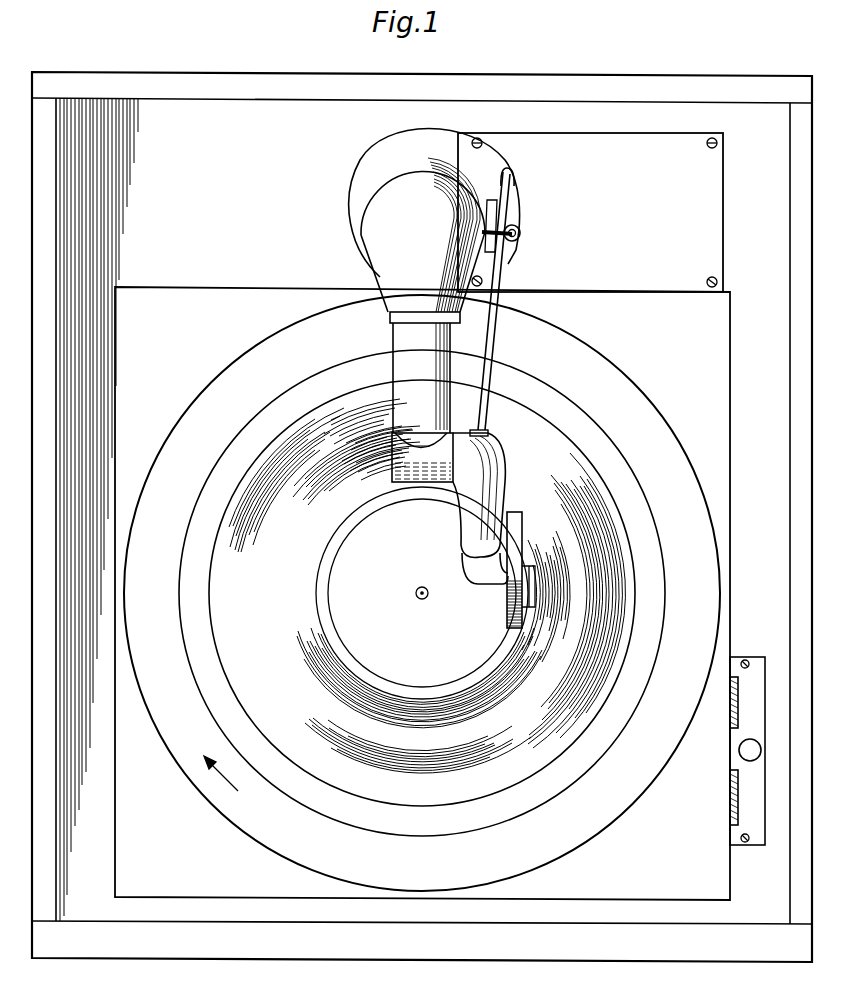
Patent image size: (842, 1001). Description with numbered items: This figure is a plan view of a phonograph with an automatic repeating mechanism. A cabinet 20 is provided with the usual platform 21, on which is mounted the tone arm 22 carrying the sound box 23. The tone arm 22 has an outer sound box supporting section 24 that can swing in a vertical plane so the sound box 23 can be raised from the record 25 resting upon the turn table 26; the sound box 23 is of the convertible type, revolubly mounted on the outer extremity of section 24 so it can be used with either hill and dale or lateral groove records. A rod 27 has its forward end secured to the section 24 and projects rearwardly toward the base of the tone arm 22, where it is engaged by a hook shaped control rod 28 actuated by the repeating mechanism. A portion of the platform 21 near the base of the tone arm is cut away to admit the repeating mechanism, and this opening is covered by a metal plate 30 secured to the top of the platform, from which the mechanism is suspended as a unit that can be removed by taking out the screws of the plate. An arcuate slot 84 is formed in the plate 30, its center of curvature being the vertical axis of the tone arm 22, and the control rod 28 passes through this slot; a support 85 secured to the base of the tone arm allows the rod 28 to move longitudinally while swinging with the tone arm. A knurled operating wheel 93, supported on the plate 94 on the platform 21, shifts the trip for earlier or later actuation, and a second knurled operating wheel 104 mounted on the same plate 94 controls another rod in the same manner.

The cabinet 20 is at (290, 76).
The platform 21 is at (675, 843).
The tone arm 22 is at (408, 268).
The sound box 23 is at (508, 602).
The outer sound box supporting section 24 is at (470, 498).
The record 25 is at (656, 636).
The turn table 26 is at (572, 845).
The rod 27 is at (490, 338).
The hook shaped control rod 28 is at (518, 247).
The metal plate 30 is at (708, 210).
The arcuate slot 84 is at (516, 188).
The support 85 is at (522, 233).
The knurled operating wheel 93 is at (728, 717).
The plate 94 is at (734, 757).
The knurled operating wheel 104 is at (730, 808).